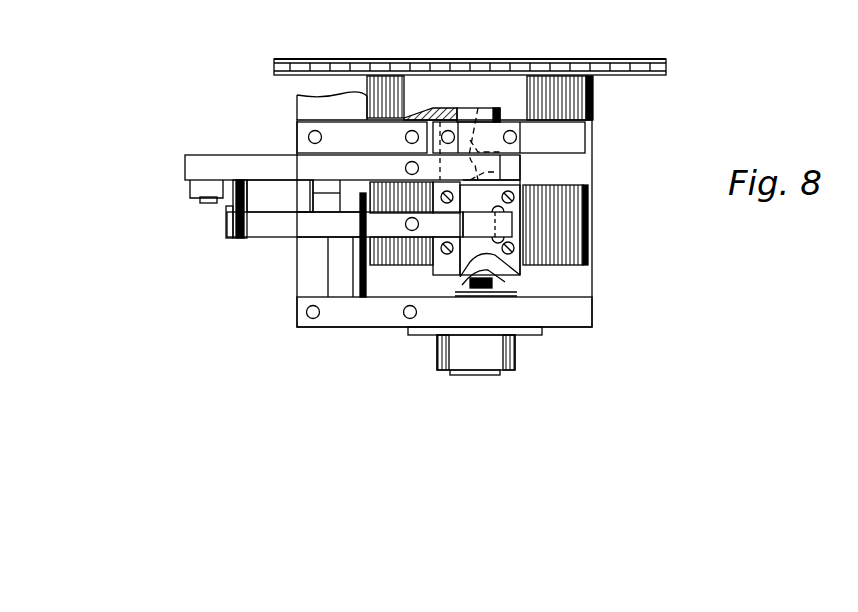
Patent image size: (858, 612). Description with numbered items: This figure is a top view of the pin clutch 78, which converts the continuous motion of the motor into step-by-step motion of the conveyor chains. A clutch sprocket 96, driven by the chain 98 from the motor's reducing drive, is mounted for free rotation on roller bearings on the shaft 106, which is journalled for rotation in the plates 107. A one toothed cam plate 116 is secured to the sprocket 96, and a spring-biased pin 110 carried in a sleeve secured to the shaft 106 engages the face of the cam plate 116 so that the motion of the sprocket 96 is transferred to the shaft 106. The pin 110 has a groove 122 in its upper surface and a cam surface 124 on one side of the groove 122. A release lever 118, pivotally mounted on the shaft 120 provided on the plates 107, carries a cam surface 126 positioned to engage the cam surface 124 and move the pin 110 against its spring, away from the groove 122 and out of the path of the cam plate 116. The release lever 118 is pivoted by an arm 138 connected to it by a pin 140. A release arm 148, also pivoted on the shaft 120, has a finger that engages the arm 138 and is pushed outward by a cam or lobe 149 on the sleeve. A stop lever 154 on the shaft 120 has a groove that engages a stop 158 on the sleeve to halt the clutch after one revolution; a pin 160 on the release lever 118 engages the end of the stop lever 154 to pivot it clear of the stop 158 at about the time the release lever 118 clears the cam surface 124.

The clutch 78 is at (622, 206).
The clutch sprocket 96 is at (597, 62).
The chain 98 is at (657, 62).
The shaft 106 is at (455, 372).
The plates 107 is at (573, 305).
The pin 110 is at (440, 280).
The one toothed cam plate 116 is at (597, 93).
The release lever 118 is at (442, 165).
The shaft 120 is at (345, 268).
The groove 122 is at (478, 108).
The cam surface 124 is at (524, 151).
The cam surface 126 is at (505, 177).
The arm 138 is at (200, 188).
The pin 140 is at (208, 200).
The release arm 148 is at (272, 185).
The cam or lobe 149 is at (437, 190).
The stop lever 154 is at (300, 232).
The stop 158 is at (415, 256).
The pin 160 is at (233, 230).